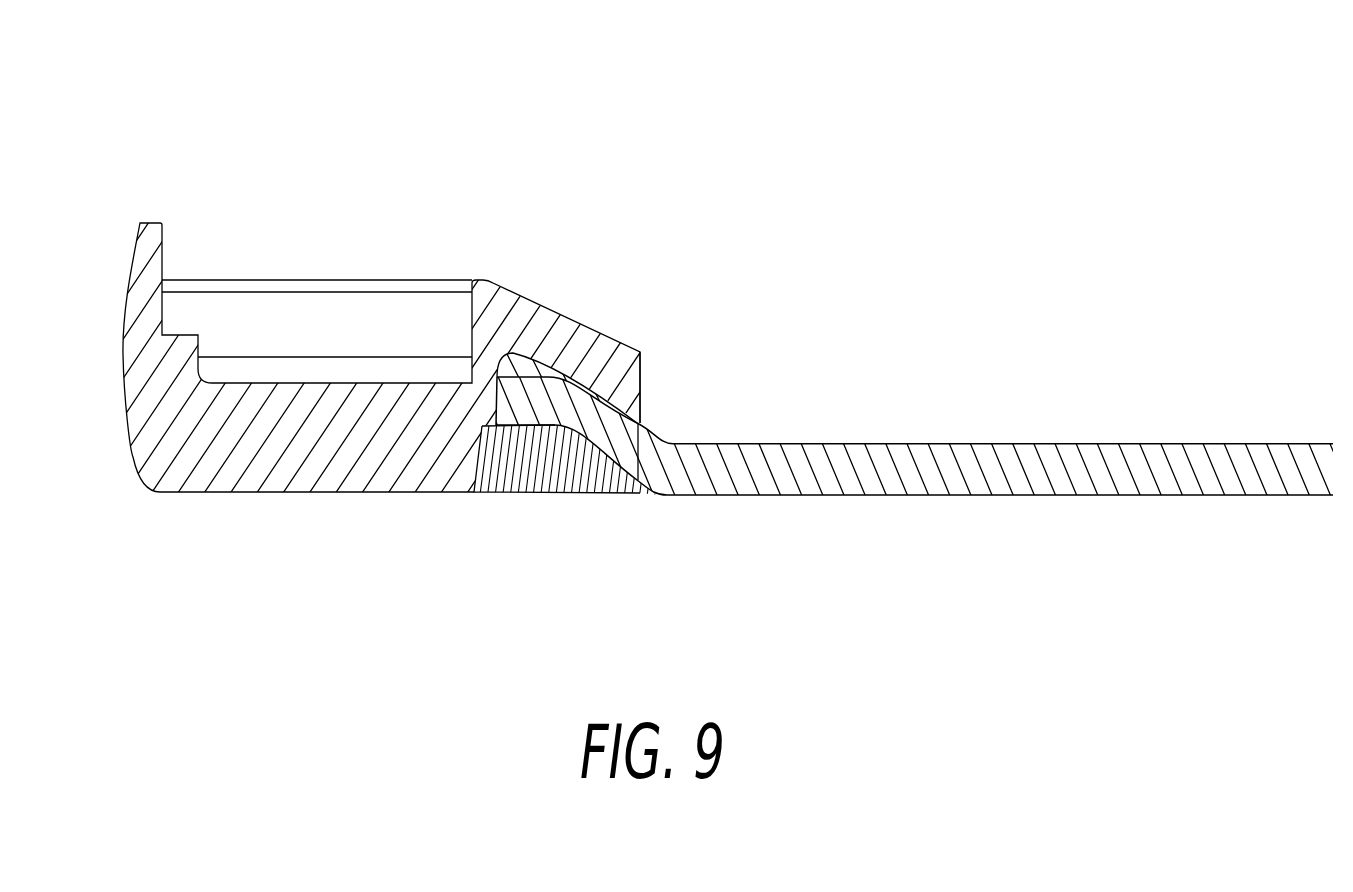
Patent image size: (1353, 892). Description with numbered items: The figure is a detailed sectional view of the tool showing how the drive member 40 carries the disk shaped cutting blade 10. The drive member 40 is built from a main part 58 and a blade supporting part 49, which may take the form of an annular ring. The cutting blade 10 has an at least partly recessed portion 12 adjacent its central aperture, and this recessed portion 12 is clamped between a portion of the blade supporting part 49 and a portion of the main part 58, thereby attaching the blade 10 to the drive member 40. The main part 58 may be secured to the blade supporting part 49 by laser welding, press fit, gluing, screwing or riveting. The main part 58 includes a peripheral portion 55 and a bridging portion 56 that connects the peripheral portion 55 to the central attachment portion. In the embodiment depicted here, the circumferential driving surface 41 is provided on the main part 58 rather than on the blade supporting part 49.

The disk shaped cutting blade 10 is at (1037, 445).
The at least partly recessed portion 12 is at (637, 470).
The drive member 40 is at (660, 155).
The circumferential driving surface 41 is at (620, 350).
The blade supporting part 49 is at (539, 527).
The peripheral portion 55 is at (681, 373).
The bridging portion 56 is at (346, 527).
The main part 58 is at (388, 232).